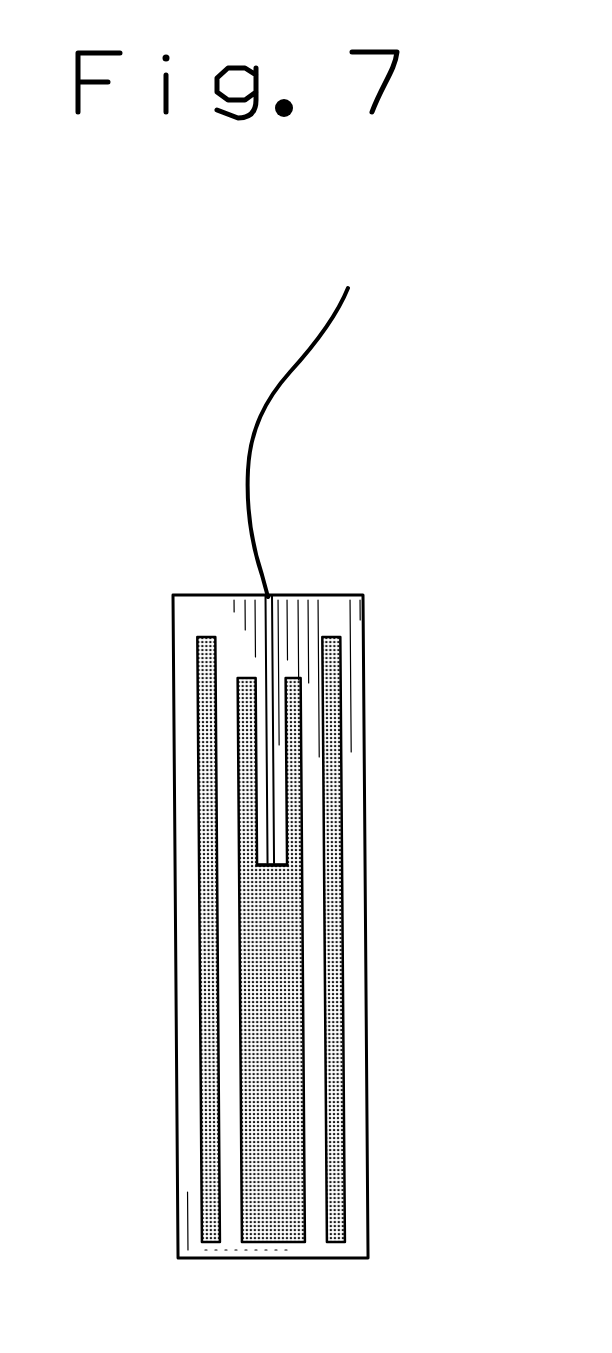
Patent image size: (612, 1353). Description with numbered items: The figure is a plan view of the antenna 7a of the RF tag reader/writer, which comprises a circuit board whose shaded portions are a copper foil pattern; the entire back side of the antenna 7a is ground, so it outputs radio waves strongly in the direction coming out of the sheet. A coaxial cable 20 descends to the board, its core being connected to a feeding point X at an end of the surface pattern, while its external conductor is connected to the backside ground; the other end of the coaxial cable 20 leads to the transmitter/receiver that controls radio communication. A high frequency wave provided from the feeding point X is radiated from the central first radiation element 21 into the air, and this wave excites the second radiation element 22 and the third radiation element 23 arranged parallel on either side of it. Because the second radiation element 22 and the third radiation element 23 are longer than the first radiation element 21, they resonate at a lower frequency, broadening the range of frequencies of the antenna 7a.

The antenna 7a is at (468, 500).
The coaxial cable 20 is at (250, 420).
The first radiation element 21 is at (280, 1047).
The second radiation element 22 is at (205, 900).
The third radiation element 23 is at (341, 803).
The feeding point X is at (270, 585).